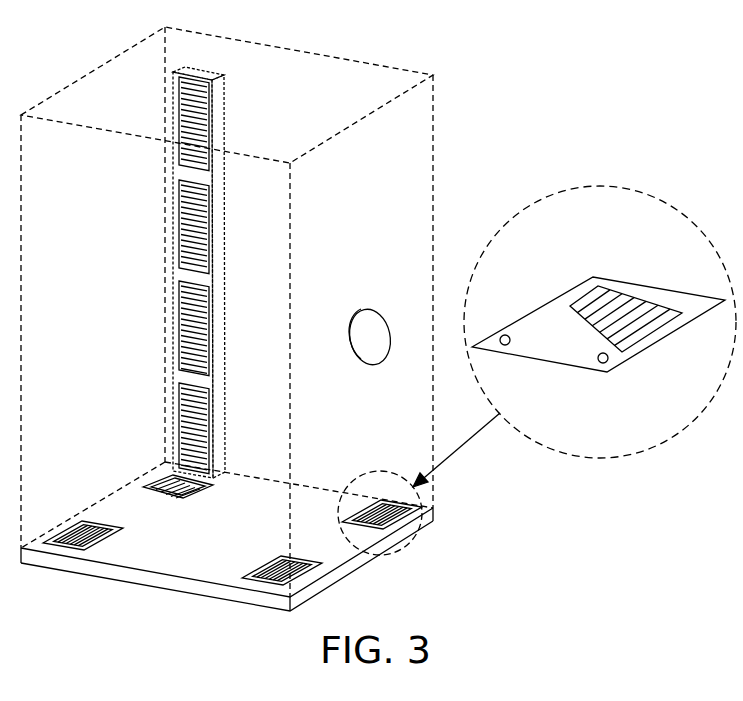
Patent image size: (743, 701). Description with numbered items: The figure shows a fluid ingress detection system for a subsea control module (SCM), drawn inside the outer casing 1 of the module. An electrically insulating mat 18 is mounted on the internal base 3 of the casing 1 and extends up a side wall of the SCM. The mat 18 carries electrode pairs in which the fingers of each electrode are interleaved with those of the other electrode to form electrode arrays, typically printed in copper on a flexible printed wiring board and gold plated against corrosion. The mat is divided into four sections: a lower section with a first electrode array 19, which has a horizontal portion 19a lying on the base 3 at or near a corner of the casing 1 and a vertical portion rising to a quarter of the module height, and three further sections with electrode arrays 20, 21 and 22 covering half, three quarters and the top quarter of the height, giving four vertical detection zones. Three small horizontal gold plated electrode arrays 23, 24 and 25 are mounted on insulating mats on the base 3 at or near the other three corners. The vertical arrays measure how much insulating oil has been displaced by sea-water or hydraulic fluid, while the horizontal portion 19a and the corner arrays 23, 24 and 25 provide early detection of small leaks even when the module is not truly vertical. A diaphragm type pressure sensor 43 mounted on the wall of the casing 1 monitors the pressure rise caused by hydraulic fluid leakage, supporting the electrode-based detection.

The casing 1 is at (450, 86).
The internal base 3 is at (171, 567).
The electrically insulating mat 18 is at (204, 68).
The first electrode array 19 is at (180, 402).
The horizontal portion 19a is at (207, 488).
The electrode array 20 is at (180, 303).
The electrode array 21 is at (180, 203).
The electrode array 22 is at (180, 103).
The electrode array 23 is at (62, 556).
The electrode array 24 is at (268, 585).
The electrode array 25 is at (372, 545).
The pressure sensor 43 is at (383, 311).